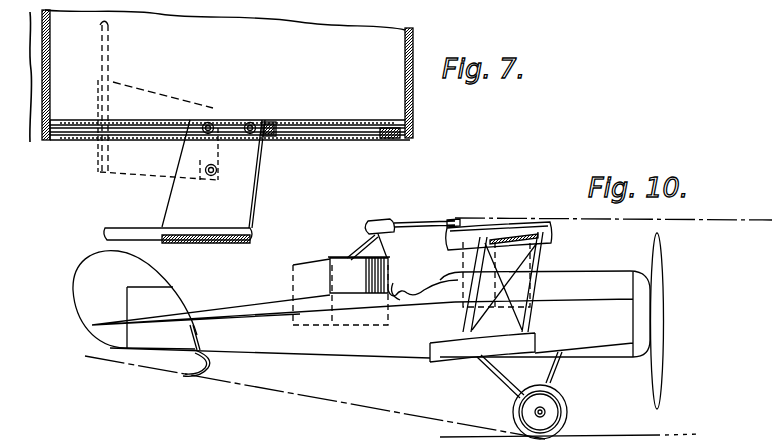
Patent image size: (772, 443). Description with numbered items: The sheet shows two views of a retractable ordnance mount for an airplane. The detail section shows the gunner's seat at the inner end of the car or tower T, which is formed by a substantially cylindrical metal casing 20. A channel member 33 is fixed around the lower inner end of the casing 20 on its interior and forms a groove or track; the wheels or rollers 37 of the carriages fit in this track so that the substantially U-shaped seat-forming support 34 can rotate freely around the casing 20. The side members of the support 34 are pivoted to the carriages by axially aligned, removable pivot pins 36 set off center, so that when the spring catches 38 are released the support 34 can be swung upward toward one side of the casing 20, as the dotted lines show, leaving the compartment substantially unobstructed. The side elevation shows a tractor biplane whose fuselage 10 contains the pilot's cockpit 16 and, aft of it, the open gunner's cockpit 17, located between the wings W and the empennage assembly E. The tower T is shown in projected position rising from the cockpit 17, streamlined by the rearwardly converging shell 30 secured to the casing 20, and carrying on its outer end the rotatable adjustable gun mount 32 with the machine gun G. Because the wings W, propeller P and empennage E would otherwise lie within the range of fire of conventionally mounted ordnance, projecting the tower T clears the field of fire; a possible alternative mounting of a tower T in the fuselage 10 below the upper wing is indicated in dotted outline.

In FIG. 7, the casing 20 is at (392, 48).
In FIG. 7, the channel member 33 is at (390, 132).
In FIG. 7, the support 34 is at (130, 100).
In FIG. 7, the pivot pins 36 is at (215, 122).
In FIG. 7, the wheels or rollers 37 is at (272, 117).
In FIG. 7, the spring catches 38 is at (252, 117).
In FIG. 10, the fuselage 10 is at (393, 350).
In FIG. 10, the pilot's cockpit 16 is at (410, 293).
In FIG. 10, the gunner's cockpit 17 is at (400, 283).
In FIG. 10, the streamline shell 30 is at (292, 267).
In FIG. 10, the adjustable gun mount 32 is at (367, 250).
In FIG. 10, the empennage assembly E is at (153, 280).
In FIG. 10, the machine gun G is at (388, 221).
In FIG. 10, the car or tower T is at (387, 260).
In FIG. 10, the wings W is at (553, 235).
In FIG. 10, the propeller P is at (660, 282).